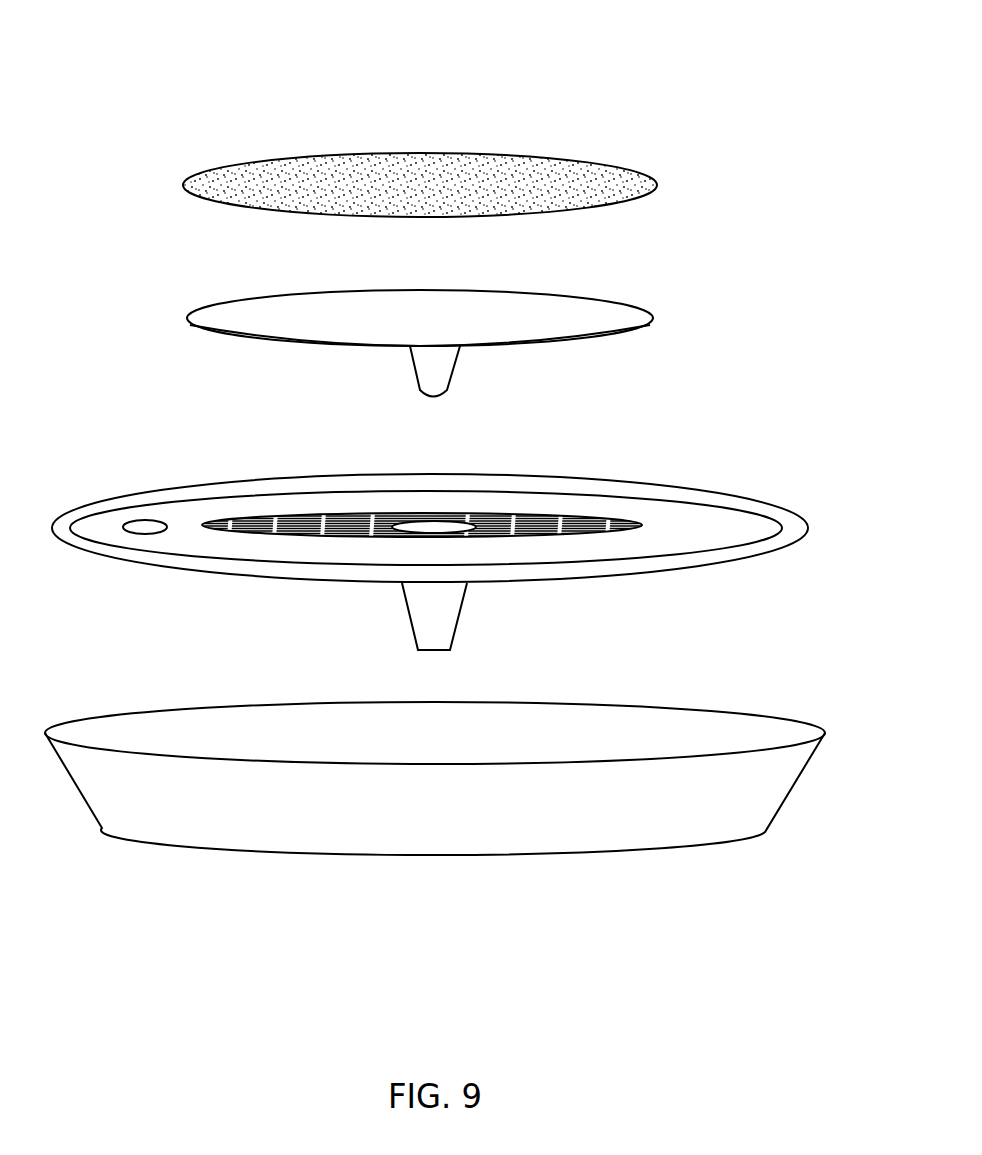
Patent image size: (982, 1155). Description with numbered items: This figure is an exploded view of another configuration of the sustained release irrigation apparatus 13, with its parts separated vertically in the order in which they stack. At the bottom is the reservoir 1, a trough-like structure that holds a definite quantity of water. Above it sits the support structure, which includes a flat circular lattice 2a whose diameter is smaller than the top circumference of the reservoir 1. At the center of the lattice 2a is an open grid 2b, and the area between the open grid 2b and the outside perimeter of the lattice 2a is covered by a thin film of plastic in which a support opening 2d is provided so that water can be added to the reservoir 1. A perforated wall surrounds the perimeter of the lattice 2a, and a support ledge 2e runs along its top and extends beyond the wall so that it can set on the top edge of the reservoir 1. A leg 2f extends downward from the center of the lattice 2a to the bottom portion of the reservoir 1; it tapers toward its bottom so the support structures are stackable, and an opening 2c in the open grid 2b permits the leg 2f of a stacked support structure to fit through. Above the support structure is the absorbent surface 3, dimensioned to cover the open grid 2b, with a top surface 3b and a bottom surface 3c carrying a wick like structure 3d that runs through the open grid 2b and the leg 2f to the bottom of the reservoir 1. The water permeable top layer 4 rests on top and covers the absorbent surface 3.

The sustained release irrigation apparatus 13 is at (475, 66).
The water permeable top layer 4 is at (517, 153).
The absorbent surface 3 is at (402, 324).
The top surface of cover plate 3b is at (306, 305).
The bottom surface 3c is at (222, 335).
The wick like structure 3d is at (455, 363).
The flat circular lattice 2a is at (713, 538).
The open grid 2b is at (300, 523).
The opening 2c is at (422, 528).
The support opening 2d is at (145, 527).
The support ledge 2e is at (518, 485).
The leg 2f is at (460, 612).
The reservoir 1 is at (625, 837).